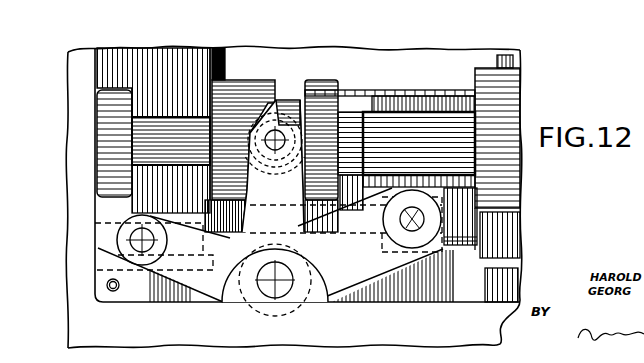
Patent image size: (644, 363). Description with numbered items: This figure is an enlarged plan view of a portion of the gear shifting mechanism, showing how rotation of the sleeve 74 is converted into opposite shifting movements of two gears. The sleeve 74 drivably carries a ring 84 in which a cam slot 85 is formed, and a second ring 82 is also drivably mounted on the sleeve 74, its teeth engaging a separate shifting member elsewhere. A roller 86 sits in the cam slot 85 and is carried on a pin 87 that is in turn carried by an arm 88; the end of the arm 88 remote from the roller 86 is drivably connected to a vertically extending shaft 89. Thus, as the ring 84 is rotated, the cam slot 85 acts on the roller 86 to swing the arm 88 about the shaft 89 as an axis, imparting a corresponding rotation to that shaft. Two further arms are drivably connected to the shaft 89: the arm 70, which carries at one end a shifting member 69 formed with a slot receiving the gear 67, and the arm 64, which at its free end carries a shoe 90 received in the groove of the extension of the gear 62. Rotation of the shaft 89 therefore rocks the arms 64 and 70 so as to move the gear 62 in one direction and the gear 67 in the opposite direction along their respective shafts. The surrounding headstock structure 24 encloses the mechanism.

The housing 24 is at (78, 112).
The gear 62 is at (168, 195).
The shifting arm 64 is at (180, 278).
The gear 67 is at (455, 238).
The shifting member 69 is at (428, 197).
The arm 70 is at (380, 262).
The sleeve 74 is at (415, 125).
The ring 82 is at (505, 195).
The ring 84 is at (222, 72).
The cam slot 85 is at (278, 98).
The roller 86 is at (262, 123).
The pin 87 is at (286, 144).
The arm 88 is at (250, 178).
The vertically extending shaft 89 is at (285, 283).
The shoe 90 is at (114, 143).